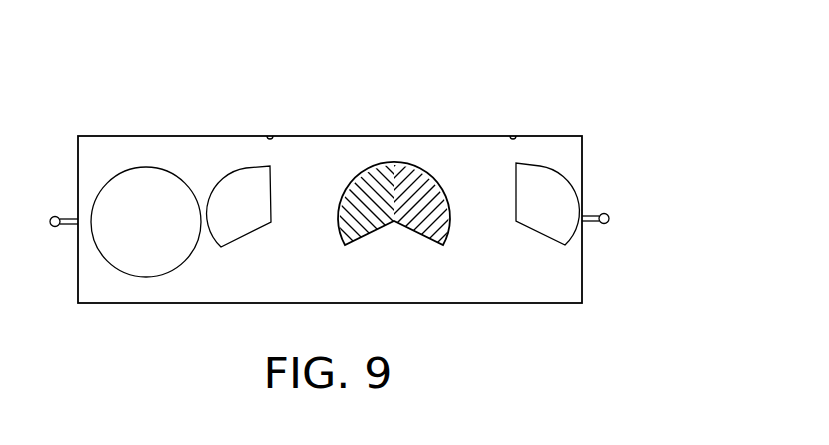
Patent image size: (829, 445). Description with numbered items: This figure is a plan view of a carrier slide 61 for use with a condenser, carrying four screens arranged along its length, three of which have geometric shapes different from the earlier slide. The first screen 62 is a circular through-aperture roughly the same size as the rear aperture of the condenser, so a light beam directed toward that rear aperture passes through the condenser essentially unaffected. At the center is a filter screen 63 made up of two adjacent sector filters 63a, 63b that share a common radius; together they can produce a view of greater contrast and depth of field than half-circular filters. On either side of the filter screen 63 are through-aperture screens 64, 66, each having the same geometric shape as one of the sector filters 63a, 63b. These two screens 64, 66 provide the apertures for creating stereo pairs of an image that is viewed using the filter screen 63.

The slide 61 is at (600, 276).
The screen 62 is at (145, 167).
The filter screen 63 is at (402, 122).
The sector filter 63a is at (300, 122).
The sector filter 63b is at (394, 221).
The through-aperture screen 64 is at (243, 170).
The through-aperture screen 66 is at (540, 168).